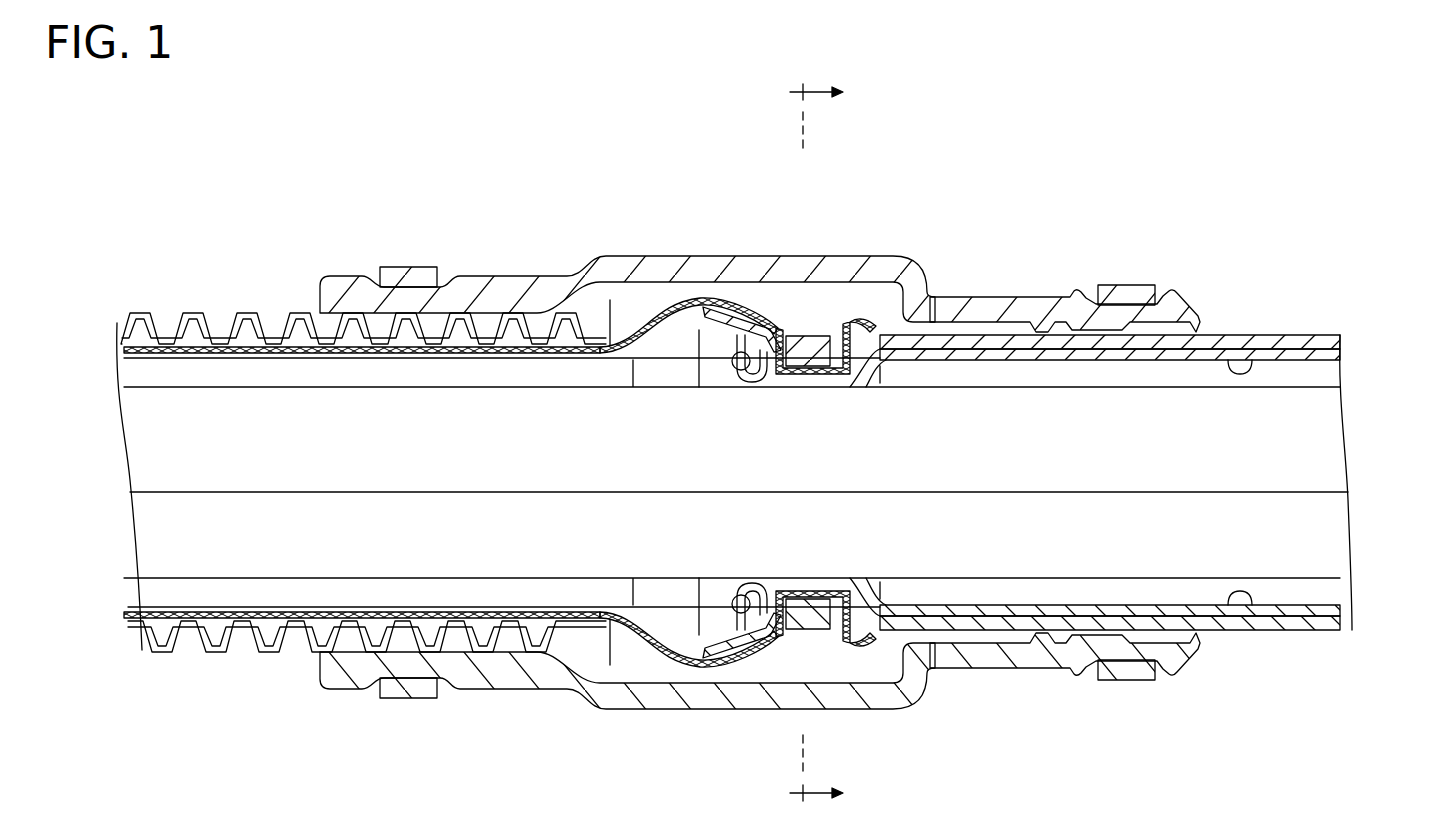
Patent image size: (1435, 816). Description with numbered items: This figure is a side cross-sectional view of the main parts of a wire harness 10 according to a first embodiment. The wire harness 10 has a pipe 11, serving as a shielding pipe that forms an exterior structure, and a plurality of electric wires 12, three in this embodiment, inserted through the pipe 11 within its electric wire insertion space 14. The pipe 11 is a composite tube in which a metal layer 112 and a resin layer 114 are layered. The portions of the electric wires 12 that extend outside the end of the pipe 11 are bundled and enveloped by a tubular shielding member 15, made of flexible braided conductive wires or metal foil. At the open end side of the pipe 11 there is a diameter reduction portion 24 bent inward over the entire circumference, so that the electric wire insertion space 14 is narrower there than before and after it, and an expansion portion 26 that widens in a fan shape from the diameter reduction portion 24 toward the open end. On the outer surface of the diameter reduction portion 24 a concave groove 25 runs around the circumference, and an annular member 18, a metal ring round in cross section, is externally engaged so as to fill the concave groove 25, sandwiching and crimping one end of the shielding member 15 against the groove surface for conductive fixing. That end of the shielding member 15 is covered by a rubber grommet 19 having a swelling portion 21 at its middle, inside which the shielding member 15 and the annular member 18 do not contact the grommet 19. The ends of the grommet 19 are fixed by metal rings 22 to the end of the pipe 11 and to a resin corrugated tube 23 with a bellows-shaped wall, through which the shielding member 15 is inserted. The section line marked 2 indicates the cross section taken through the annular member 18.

The wire harness 10 is at (627, 142).
The section line II-II 2 is at (807, 442).
The pipe 11 is at (1245, 248).
The electric wires 12 is at (1340, 508).
The electric wire insertion space 14 is at (1315, 381).
The shielding member 15 is at (664, 310).
The annular member 18 is at (814, 338).
The grommet 19 is at (1032, 297).
The swelling portion 21 is at (889, 257).
The metal rings 22 is at (410, 268).
The corrugated tube 23 is at (246, 318).
The diameter reduction portion 24 is at (742, 356).
The concave groove 25 is at (838, 372).
The expansion portion 26 is at (703, 307).
The metal layer 112 is at (1301, 333).
The resin layer 114 is at (1250, 362).